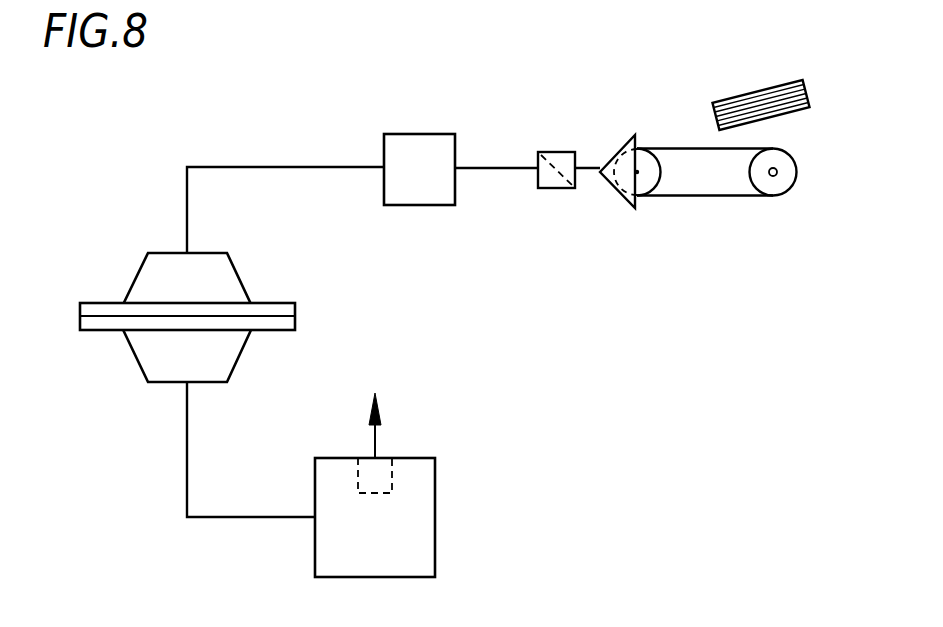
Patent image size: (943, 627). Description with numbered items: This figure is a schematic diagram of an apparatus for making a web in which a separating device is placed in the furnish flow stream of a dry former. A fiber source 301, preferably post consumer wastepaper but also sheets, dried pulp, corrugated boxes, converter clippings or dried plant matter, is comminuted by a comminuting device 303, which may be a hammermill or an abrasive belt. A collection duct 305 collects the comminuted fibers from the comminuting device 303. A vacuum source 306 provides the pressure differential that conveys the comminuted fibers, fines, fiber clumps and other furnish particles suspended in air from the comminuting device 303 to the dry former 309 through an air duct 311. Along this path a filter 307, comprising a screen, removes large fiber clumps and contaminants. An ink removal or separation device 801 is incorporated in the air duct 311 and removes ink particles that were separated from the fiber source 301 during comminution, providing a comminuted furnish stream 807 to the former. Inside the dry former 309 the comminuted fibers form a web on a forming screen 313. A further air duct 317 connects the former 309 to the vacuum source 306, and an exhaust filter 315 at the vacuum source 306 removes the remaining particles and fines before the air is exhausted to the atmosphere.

The fiber source 301 is at (757, 92).
The comminuting device 303 is at (780, 148).
The collection duct 305 is at (613, 152).
The filter 307 is at (555, 152).
The dry former 309 is at (137, 275).
The air duct 311 is at (287, 166).
The forming screen 313 is at (227, 310).
The exhaust filter 315 is at (392, 477).
The air duct 317 is at (183, 407).
The vacuum source 306 is at (437, 553).
The ink removal device 801 is at (430, 133).
The comminuted furnish stream 807 is at (487, 168).